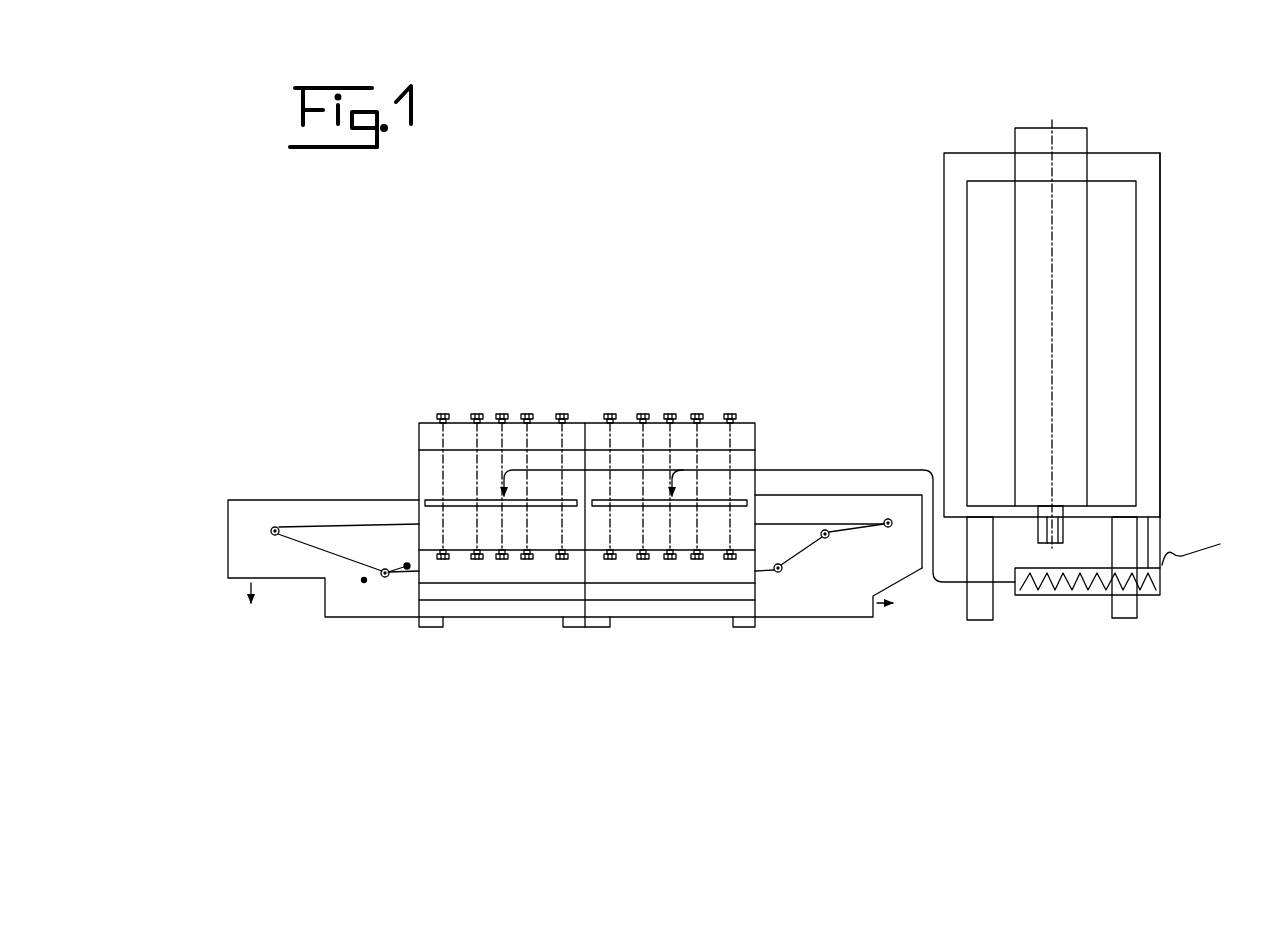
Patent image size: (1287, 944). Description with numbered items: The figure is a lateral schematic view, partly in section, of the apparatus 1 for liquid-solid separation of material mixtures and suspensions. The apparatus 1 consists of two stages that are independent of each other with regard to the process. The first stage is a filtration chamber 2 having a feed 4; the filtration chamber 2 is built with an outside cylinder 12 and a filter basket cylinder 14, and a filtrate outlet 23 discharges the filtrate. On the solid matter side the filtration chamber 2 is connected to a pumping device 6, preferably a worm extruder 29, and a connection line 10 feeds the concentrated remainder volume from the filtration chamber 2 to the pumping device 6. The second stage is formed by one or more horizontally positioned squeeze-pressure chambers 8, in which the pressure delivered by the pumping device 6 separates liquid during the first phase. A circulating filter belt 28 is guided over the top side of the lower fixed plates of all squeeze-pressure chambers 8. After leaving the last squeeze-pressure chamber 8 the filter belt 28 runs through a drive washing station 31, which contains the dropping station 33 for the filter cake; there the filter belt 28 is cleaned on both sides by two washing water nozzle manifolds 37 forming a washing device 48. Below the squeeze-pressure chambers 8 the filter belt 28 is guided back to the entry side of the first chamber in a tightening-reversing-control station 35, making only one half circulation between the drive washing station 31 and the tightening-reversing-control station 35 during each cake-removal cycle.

The apparatus 1 is at (593, 403).
The filtration chamber 2 is at (1140, 372).
The feed 4 is at (1165, 207).
The pumping device 6 is at (1202, 549).
The squeeze-pressure chamber 8 is at (464, 505).
The connection line 10 is at (818, 468).
The outside cylinder 12 is at (1160, 263).
The filter basket cylinder 14 is at (1137, 302).
The filtrate outlet 23 is at (1053, 547).
The filter belt 28 is at (797, 557).
The worm extruder 29 is at (1062, 595).
The drive washing station 31 is at (326, 510).
The dropping station 33 is at (243, 602).
The tightening-reversing-control station 35 is at (887, 563).
The washing water nozzle manifolds 37 is at (405, 570).
The washing device 48 is at (387, 566).